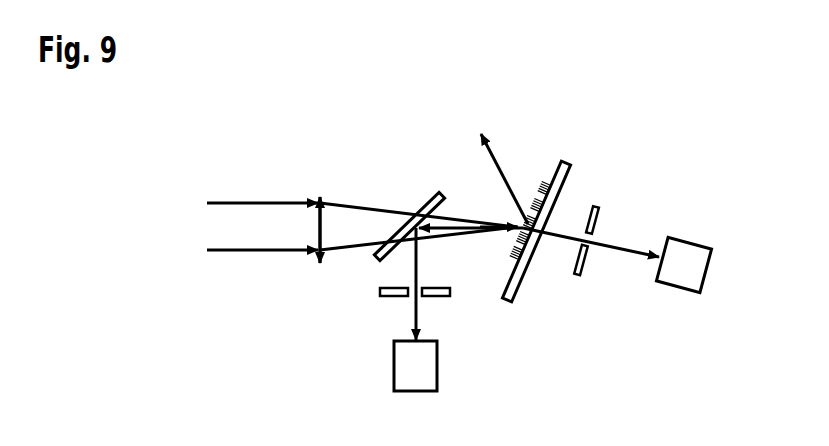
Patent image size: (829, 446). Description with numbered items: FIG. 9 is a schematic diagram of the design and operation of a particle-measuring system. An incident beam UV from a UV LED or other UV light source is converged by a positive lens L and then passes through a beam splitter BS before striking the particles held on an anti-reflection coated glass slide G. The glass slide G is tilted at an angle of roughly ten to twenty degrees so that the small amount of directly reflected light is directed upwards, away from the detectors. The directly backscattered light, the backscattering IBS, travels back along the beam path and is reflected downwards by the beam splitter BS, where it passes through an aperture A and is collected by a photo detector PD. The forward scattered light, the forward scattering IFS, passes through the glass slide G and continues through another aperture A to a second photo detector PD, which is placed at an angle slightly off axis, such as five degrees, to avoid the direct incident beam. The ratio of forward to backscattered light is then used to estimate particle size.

The incident beam UV is at (351, 226).
The lens L is at (318, 213).
The beam splitter BS is at (448, 259).
The aperture A is at (479, 255).
The glass slide G is at (529, 218).
The backscattering IBS is at (432, 329).
The forward scattering IFS is at (591, 242).
The photo detector PD is at (553, 314).